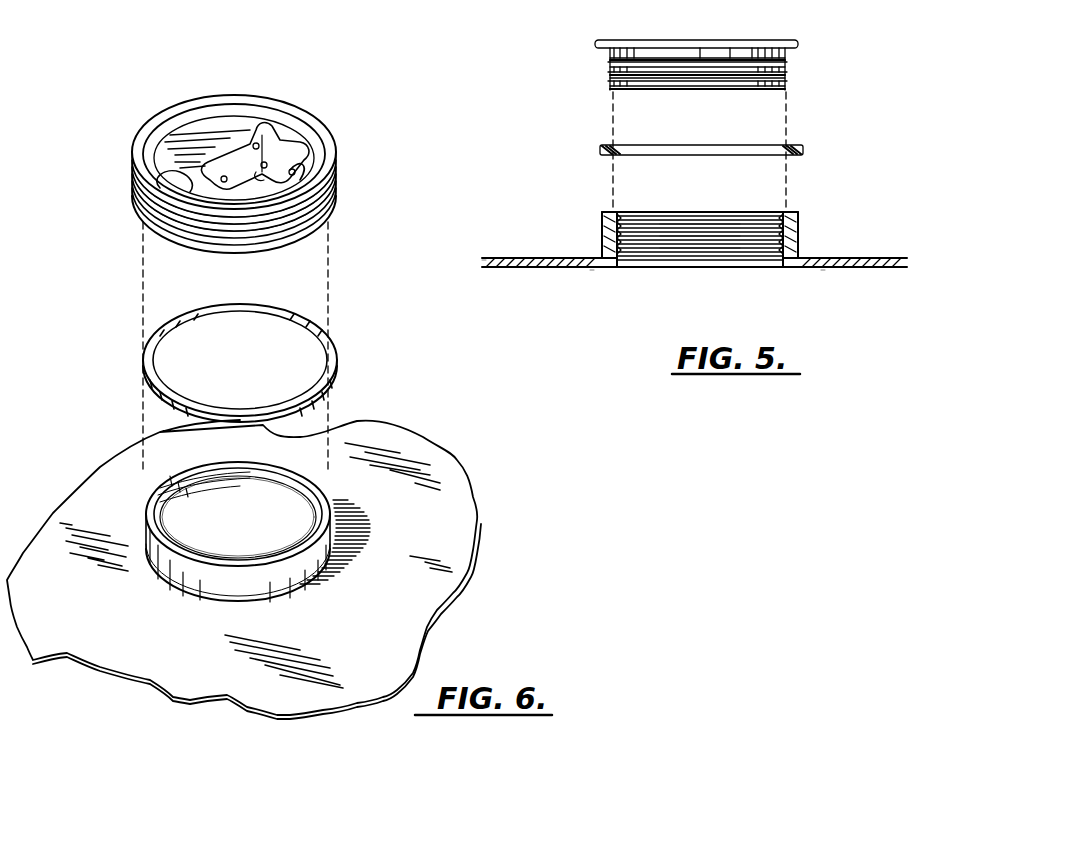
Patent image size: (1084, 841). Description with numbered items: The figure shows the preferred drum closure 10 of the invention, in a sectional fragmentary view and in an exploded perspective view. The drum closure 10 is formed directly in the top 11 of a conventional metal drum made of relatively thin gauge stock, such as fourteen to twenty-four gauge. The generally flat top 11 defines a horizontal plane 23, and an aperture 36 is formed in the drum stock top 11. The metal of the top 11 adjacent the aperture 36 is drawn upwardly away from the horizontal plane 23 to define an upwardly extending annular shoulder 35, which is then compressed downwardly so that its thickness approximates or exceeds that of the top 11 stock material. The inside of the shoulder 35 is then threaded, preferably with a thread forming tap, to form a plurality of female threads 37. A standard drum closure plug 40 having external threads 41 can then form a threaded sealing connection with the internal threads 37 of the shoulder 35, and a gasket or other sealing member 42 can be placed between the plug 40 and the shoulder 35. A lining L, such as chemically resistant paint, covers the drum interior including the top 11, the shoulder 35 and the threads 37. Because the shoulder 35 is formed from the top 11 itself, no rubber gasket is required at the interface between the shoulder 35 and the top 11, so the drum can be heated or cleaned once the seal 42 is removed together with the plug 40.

In FIG. 5, the drum closure 10 is at (500, 67).
In FIG. 6, the drum closure 10 is at (472, 450).
In FIG. 5, the top 11 is at (537, 272).
In FIG. 6, the top 11 is at (178, 660).
In FIG. 5, the horizontal plane 23 is at (502, 259).
In FIG. 5, the annular shoulder 35 is at (602, 234).
In FIG. 6, the annular shoulder 35 is at (197, 573).
In FIG. 6, the aperture 36 is at (243, 507).
In FIG. 5, the female threads 37 is at (708, 244).
In FIG. 5, the drum closure plug 40 is at (598, 43).
In FIG. 6, the drum closure plug 40 is at (313, 130).
In FIG. 6, the external threads 41 is at (332, 193).
In FIG. 5, the gasket 42 is at (601, 150).
In FIG. 6, the gasket 42 is at (337, 365).
In FIG. 5, the lining L is at (592, 272).